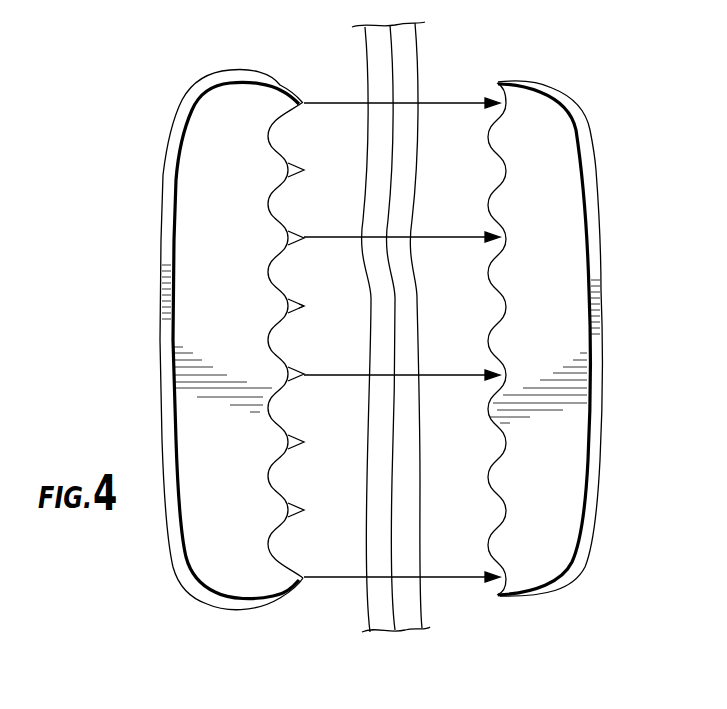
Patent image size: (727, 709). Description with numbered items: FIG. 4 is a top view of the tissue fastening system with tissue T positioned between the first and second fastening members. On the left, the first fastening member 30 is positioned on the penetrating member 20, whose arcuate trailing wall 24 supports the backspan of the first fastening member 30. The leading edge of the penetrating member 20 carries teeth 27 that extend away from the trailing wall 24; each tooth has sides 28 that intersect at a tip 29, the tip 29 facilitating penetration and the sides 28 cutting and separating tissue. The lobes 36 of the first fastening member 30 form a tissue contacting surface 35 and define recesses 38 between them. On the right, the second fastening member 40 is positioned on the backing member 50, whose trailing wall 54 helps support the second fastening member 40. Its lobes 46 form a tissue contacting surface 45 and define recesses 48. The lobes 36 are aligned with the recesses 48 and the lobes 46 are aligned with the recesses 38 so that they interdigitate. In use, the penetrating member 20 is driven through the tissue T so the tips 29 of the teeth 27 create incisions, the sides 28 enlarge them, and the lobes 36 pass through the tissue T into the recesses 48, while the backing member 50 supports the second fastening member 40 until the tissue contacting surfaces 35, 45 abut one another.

The penetrating member 20 is at (228, 314).
The trailing wall 24 is at (163, 232).
The teeth 27 is at (288, 228).
The sides 28 is at (289, 298).
The tip 29 is at (298, 303).
The first fastening member 30 is at (217, 97).
The tissue contacting surface 35 is at (272, 466).
The lobes 36 is at (283, 160).
The recesses 38 is at (270, 203).
The second fastening member 40 is at (542, 313).
The tissue contacting surface 45 is at (495, 428).
The lobes 46 is at (492, 200).
The recesses 48 is at (508, 238).
The backing member 50 is at (580, 98).
The trailing wall 54 is at (588, 177).
The tissue T is at (407, 597).